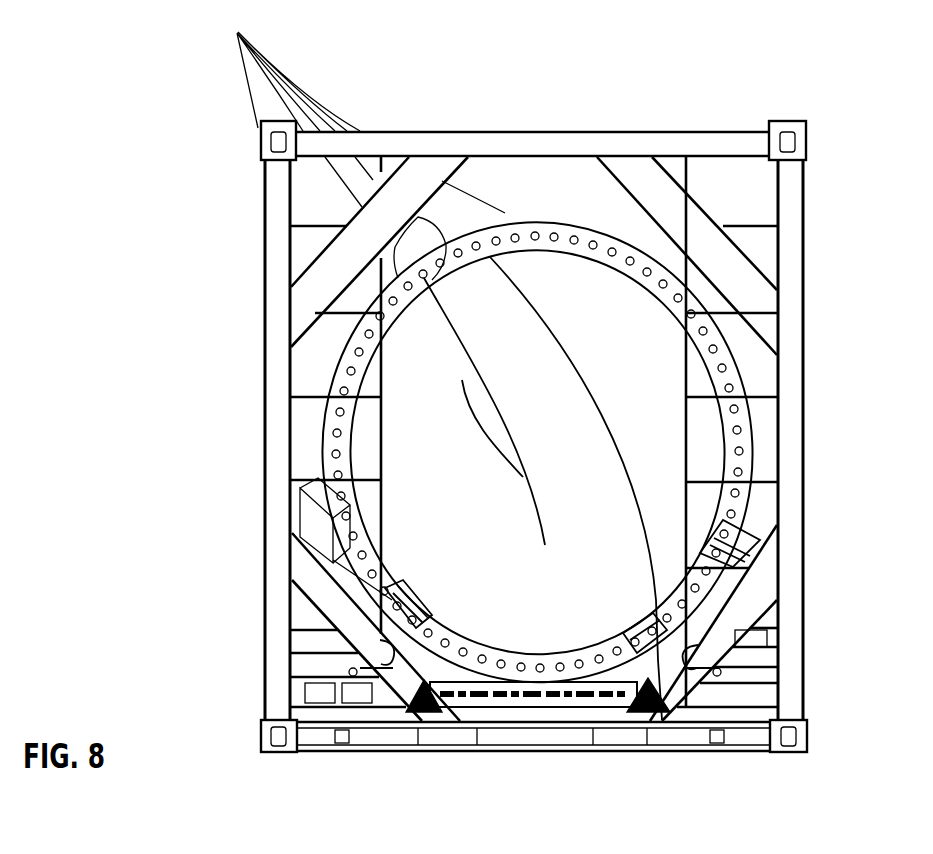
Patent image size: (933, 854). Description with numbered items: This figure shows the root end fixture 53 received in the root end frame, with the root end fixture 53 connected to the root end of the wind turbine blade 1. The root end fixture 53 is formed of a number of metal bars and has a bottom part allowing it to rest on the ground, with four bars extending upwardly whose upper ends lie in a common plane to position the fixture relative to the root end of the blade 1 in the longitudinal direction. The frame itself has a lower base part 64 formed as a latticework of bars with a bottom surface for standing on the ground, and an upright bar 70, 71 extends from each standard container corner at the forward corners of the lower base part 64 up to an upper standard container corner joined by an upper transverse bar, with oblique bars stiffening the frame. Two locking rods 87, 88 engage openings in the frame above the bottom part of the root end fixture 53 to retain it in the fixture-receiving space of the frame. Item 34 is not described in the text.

The blade 1 is at (603, 222).
The transport frame 34 is at (815, 572).
The root end fixture 53 is at (760, 512).
The lower base part 64 is at (765, 760).
The upright bar 70 is at (793, 637).
The upright bar 71 is at (262, 398).
The locking rod 87 is at (350, 672).
The locking rod 88 is at (775, 683).